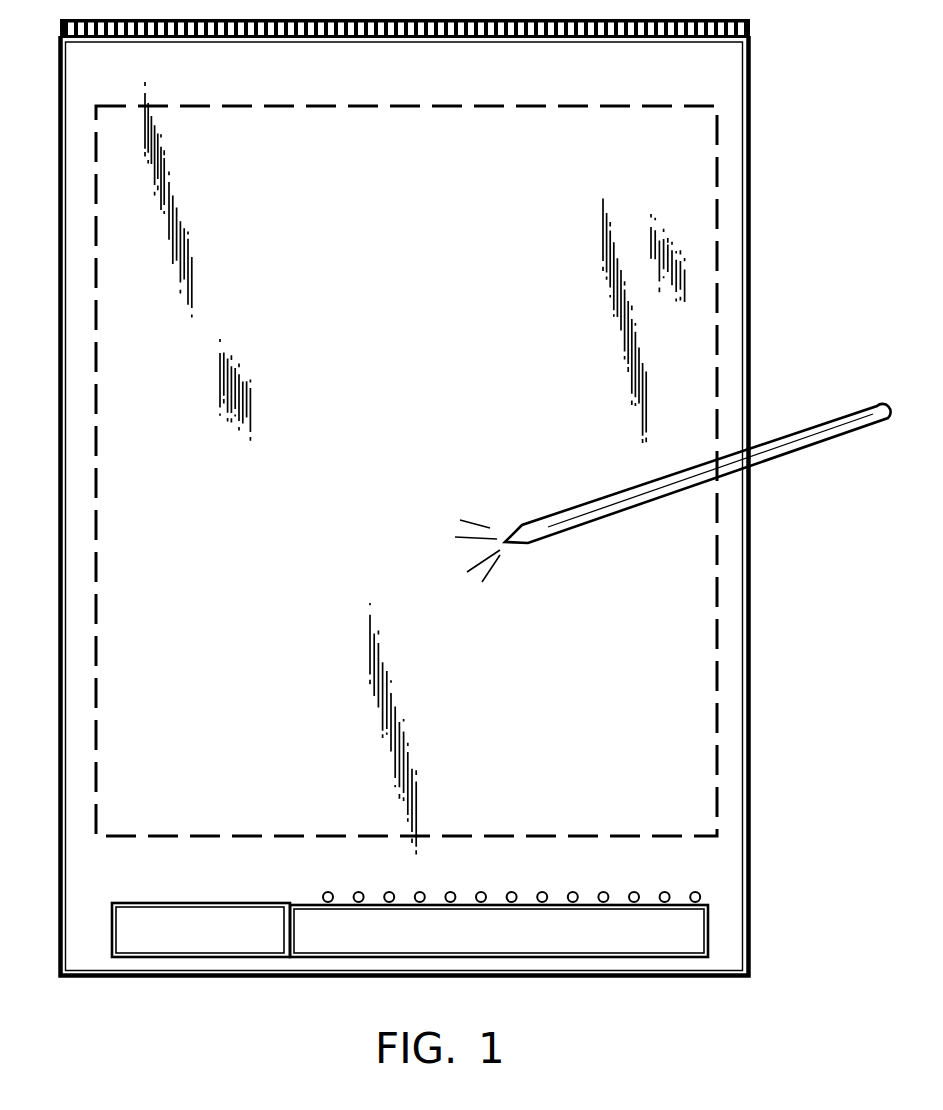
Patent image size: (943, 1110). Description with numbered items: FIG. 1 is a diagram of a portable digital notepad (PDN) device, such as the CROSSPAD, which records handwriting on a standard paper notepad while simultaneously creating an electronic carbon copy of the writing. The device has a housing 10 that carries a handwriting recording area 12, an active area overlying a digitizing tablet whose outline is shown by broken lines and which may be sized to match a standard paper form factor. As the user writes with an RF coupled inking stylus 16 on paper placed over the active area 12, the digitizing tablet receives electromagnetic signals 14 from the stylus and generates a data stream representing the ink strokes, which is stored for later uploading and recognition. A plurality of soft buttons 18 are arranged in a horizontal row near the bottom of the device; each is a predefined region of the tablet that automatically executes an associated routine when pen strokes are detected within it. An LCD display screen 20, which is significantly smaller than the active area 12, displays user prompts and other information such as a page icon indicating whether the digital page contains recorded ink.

The housing 10 is at (60, 60).
The handwriting recording area 12 is at (133, 213).
The electromagnetic signals 14 is at (495, 567).
The inking stylus 16 is at (805, 452).
The soft buttons 18 is at (700, 893).
The LCD display screen 20 is at (143, 945).